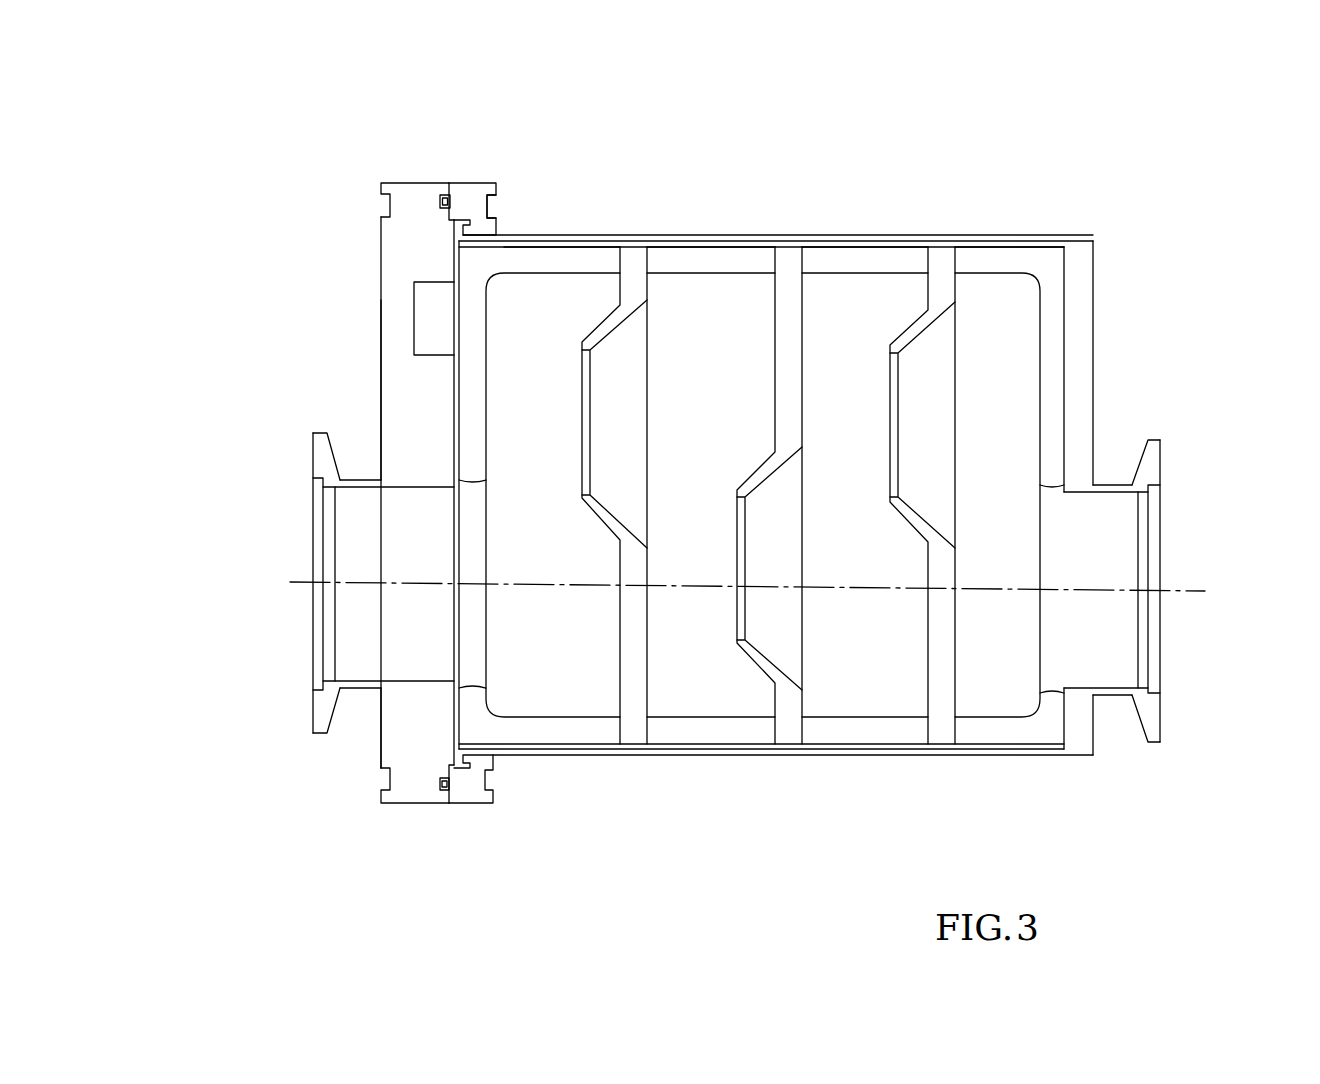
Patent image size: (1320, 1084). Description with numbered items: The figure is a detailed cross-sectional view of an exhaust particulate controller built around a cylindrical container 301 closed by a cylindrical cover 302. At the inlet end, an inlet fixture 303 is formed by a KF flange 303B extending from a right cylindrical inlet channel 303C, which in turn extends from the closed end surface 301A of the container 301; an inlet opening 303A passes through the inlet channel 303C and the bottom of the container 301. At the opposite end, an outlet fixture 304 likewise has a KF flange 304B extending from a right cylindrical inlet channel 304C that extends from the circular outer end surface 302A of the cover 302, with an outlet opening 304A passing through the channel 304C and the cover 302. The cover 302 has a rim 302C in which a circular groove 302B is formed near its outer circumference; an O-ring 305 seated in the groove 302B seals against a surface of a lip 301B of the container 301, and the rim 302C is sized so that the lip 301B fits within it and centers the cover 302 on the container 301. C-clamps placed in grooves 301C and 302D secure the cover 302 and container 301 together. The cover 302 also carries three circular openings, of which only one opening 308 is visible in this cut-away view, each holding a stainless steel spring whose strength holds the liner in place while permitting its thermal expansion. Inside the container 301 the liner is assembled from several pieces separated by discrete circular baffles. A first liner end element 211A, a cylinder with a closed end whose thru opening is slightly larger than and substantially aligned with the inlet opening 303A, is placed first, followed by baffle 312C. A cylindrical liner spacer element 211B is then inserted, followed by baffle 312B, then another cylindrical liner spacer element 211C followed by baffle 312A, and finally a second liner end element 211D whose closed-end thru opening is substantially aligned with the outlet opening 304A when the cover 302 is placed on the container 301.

The cylindrical container 301 is at (587, 760).
The closed end surface 301A is at (1097, 270).
The lip 301B is at (447, 208).
The groove 301C is at (497, 207).
The cylindrical cover 302 is at (392, 274).
The circular outer end surface 302A is at (381, 322).
The circular groove 302B is at (447, 174).
The rim 302C is at (432, 788).
The groove 302D is at (382, 206).
The inlet fixture 303 is at (1185, 468).
The inlet opening 303A is at (1183, 637).
The KF flange 303B is at (1168, 430).
The right cylindrical inlet channel 303C is at (1113, 700).
The outlet fixture 304 is at (290, 432).
The outlet opening 304A is at (292, 556).
The KF flange 304B is at (345, 422).
The right cylindrical inlet channel 304C is at (352, 690).
The O-ring 305 is at (297, 592).
The circular opening 308 is at (428, 352).
The first liner end element 211A is at (1017, 252).
The cylindrical liner spacer element 211B is at (866, 252).
The cylindrical liner spacer element 211C is at (707, 252).
The second liner end element 211D is at (580, 252).
The baffle 312A is at (636, 692).
The baffle 312B is at (788, 735).
The baffle 312C is at (940, 650).